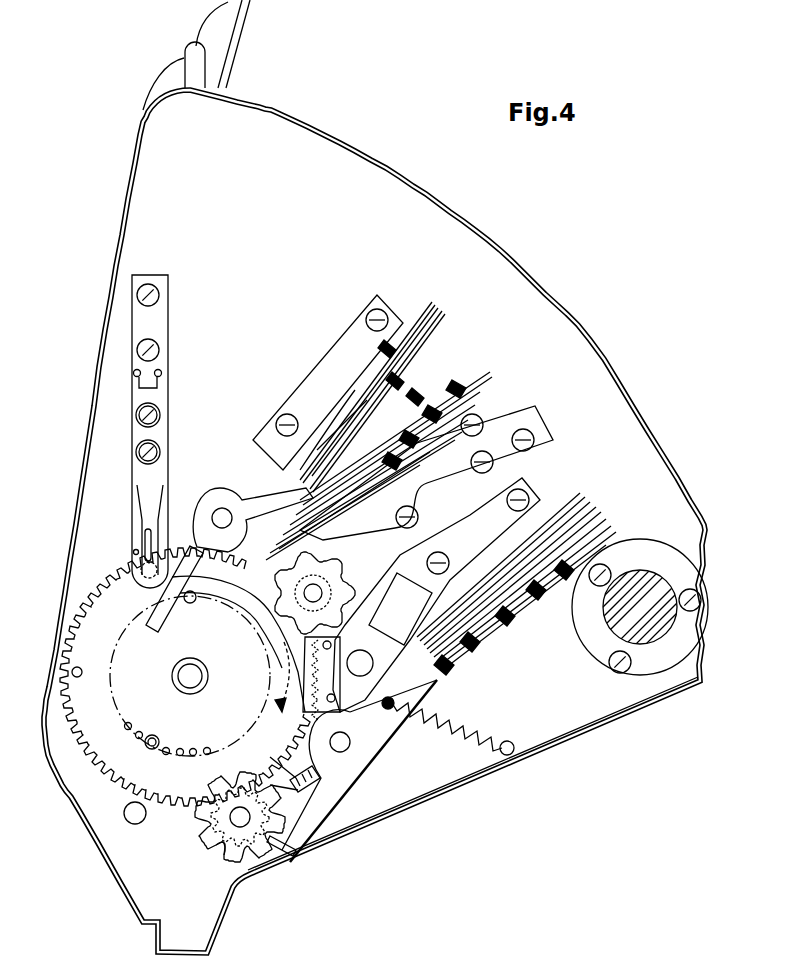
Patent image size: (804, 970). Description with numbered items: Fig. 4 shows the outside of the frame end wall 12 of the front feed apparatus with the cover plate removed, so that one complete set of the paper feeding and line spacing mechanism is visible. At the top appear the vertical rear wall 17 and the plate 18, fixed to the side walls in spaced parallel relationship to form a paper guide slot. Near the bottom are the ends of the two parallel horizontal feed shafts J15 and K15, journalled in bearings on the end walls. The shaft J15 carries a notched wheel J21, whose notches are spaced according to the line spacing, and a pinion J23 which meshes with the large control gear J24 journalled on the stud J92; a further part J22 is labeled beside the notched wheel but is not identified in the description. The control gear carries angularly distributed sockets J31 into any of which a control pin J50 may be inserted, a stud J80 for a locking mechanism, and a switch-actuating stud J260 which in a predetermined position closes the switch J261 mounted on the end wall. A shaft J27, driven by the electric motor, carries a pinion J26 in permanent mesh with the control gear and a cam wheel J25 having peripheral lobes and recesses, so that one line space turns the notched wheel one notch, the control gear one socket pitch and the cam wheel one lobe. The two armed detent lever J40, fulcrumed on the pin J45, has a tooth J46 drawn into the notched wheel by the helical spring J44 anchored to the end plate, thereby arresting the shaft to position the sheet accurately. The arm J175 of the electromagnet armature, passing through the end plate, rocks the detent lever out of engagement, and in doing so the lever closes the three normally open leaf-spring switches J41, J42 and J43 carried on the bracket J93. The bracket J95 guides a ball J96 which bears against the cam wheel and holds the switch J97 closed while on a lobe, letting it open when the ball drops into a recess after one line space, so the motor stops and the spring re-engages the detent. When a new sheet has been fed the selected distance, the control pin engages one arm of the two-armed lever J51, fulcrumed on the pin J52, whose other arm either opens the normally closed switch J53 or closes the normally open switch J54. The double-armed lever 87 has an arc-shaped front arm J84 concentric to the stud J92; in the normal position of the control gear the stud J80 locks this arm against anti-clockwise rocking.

The frame end wall 12 is at (473, 248).
The vertical rear wall 17 is at (249, 27).
The plate 18 is at (200, 68).
The switch J261 is at (140, 553).
The control gear J24 is at (110, 778).
The stud J92 is at (188, 676).
The switch-actuating stud J260 is at (82, 670).
The stud J80 is at (192, 602).
The control pin J50 is at (153, 738).
The sockets J31 is at (195, 747).
The shaft K15 is at (130, 820).
The front arm J84 is at (260, 607).
The shaft J27 is at (307, 612).
The two-armed lever J51 is at (207, 503).
The pin J52 is at (225, 513).
The cam wheel J25 is at (337, 580).
The pinion J26 is at (328, 572).
The bracket J95 is at (424, 480).
The double-armed lever 87 is at (399, 623).
The bracket J93 is at (521, 482).
The switch J54 is at (318, 453).
The switch J53 is at (340, 477).
The switch J97 is at (292, 530).
The ball J96 is at (282, 554).
The electrical switch J41 is at (497, 613).
The electrical switch J42 is at (477, 637).
The electrical switch J43 is at (468, 652).
The two armed detent lever J40 is at (348, 775).
The pin J45 is at (352, 743).
The helical spring J44 is at (470, 728).
The arm J175 is at (300, 752).
The pinion J23 is at (215, 819).
The notched wheel J21 is at (226, 840).
The tooth J22 is at (227, 856).
The tooth J46 is at (293, 853).
The shaft J15 is at (275, 863).